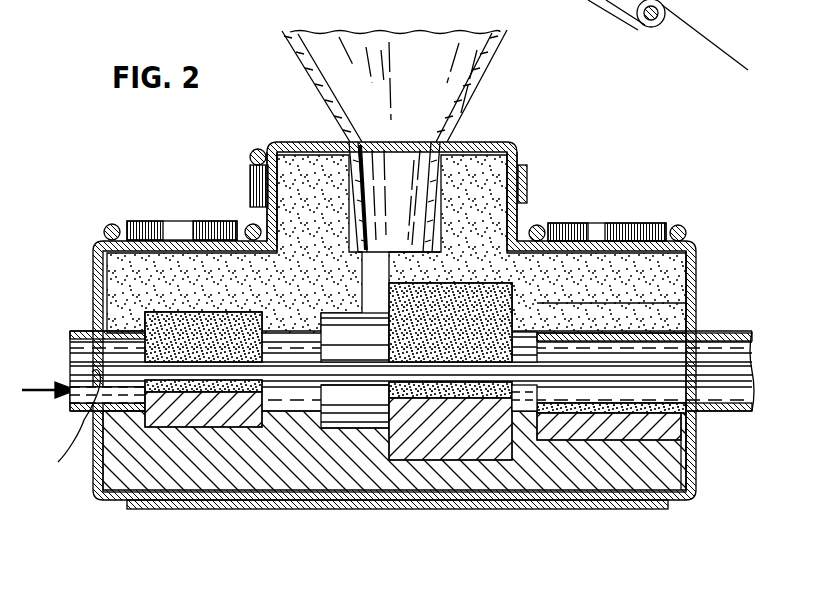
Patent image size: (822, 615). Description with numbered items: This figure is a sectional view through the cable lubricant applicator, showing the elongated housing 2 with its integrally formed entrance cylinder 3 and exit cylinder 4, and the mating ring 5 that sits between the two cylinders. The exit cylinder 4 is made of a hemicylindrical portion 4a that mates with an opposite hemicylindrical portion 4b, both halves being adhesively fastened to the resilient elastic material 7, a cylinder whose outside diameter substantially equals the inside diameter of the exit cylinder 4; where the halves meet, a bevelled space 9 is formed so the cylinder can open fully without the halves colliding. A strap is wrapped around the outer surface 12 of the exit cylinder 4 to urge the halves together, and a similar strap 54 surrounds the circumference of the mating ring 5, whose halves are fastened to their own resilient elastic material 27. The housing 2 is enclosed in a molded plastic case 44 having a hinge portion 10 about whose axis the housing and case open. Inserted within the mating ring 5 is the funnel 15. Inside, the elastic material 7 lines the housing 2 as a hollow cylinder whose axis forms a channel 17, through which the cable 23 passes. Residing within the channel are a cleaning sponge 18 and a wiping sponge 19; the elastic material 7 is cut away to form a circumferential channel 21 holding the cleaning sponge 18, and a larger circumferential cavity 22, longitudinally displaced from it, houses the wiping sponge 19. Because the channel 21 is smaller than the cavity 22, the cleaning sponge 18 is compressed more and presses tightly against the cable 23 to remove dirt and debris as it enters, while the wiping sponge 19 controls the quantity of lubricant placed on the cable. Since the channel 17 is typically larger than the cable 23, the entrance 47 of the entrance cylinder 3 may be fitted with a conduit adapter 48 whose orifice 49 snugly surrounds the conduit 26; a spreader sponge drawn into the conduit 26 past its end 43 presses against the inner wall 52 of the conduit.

The housing 2 is at (700, 38).
The entrance cylinder 3 is at (93, 266).
The exit cylinder 4 is at (696, 270).
The hemicylindrical portion 4a is at (698, 291).
The hemicylindrical portion 4b is at (437, 6).
The mating ring 5 is at (521, 160).
The resilient elastic material 7 is at (682, 480).
The space 9 is at (548, 8).
The hinge portion 10 is at (519, 6).
The surface 12 is at (406, 2).
The funnel 15 is at (481, 62).
The channel 17 is at (143, 352).
The cleaning sponge 18 is at (208, 315).
The wiping sponge 19 is at (507, 280).
The circumferential channel 21 is at (203, 410).
The circumferential cavity 22 is at (443, 455).
The cable 23 is at (72, 378).
The conduit 26 is at (711, 332).
The resilient elastic material 27 is at (487, 232).
The end of conduit 43 is at (530, 322).
The molded plastic case 44 is at (482, 507).
The entrance 47 is at (72, 331).
The conduit adapter 48 is at (64, 424).
The orifice 49 is at (80, 410).
The inner wall 52 is at (667, 12).
The strap 54 is at (525, 185).